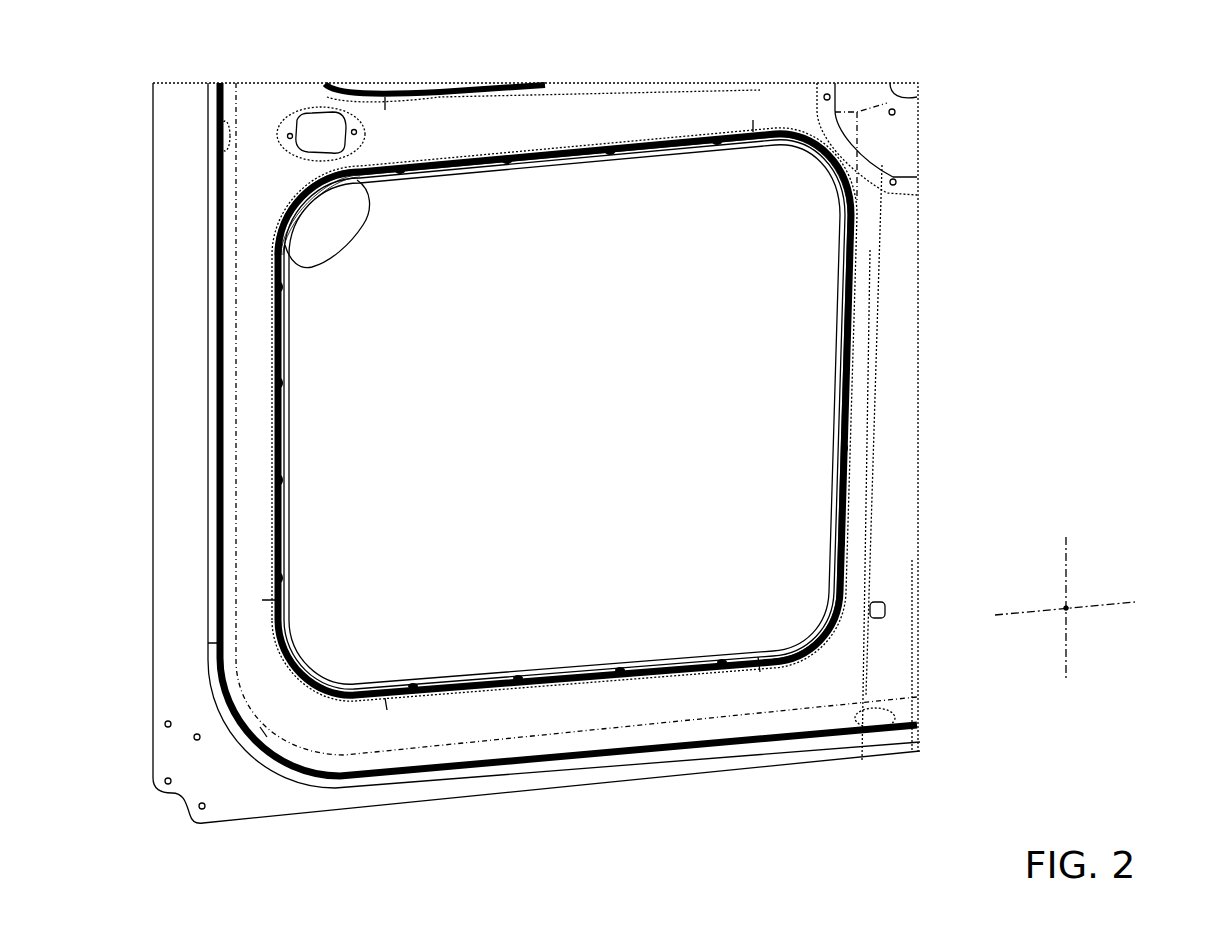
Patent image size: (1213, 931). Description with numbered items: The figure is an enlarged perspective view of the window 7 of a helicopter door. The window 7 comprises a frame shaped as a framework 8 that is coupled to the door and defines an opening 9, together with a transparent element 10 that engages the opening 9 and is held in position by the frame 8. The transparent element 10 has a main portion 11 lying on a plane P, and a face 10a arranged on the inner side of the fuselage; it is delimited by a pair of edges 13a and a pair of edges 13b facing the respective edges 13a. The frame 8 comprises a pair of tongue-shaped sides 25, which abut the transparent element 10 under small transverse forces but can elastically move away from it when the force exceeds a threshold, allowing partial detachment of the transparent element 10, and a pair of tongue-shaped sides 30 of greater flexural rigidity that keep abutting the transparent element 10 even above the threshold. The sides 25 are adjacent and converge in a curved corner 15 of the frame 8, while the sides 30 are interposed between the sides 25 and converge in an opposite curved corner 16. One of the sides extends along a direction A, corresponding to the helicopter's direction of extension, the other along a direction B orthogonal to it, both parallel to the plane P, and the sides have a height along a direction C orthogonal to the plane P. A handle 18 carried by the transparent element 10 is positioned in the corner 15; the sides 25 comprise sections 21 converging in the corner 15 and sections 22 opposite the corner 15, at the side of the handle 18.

The window 7 is at (955, 130).
The frame 8 is at (615, 166).
The opening 9 is at (283, 383).
The transparent element 10 is at (512, 217).
The face 10a is at (697, 218).
The main portion 11 is at (746, 303).
The edges 13a is at (424, 185).
The edges 13b is at (837, 368).
The corner 15 is at (289, 197).
The corner 16 is at (797, 645).
The handle 18 is at (337, 215).
The sections 21 is at (340, 184).
The sections 22 is at (560, 176).
The sides 25 is at (597, 139).
The sides 30 is at (855, 482).
The direction A is at (1070, 553).
The direction B is at (1127, 604).
The direction C is at (1068, 610).
The plane P is at (1066, 608).